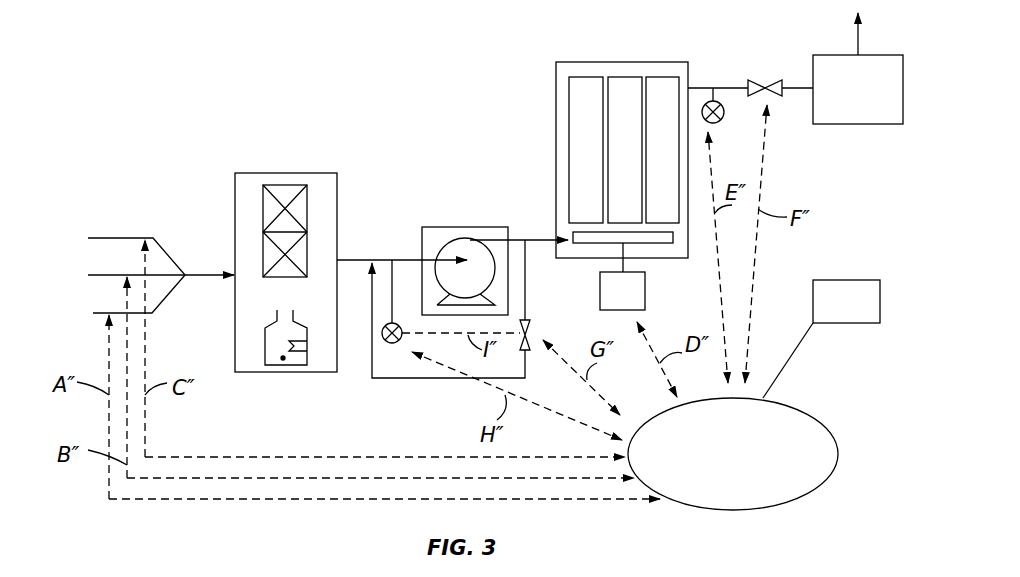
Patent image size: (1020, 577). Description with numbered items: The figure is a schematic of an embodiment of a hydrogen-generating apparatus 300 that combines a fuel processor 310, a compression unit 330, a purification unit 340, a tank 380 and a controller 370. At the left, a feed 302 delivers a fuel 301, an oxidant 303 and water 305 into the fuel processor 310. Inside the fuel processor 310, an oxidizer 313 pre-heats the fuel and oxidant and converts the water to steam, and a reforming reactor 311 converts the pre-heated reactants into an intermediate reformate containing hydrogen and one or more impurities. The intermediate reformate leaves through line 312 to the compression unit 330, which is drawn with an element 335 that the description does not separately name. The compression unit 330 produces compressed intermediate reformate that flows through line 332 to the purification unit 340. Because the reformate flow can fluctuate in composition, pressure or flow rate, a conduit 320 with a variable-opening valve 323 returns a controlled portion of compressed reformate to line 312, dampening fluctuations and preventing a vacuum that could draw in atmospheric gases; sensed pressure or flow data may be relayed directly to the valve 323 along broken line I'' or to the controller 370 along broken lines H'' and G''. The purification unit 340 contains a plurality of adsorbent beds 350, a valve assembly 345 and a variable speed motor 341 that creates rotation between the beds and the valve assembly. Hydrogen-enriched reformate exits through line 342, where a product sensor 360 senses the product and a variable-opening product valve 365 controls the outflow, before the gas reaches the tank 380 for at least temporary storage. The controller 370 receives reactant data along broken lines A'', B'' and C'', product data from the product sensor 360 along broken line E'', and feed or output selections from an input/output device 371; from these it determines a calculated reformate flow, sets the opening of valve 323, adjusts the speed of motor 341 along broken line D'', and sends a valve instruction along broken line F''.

The apparatus 300 is at (401, 88).
The fuel 301 is at (76, 250).
The feed 302 is at (200, 278).
The oxidant 303 is at (76, 287).
The water 305 is at (76, 325).
The fuel processor 310 is at (247, 172).
The reforming reactor 311 is at (288, 192).
The line 312 is at (355, 258).
The oxidizer 313 is at (273, 353).
The conduit 320 is at (395, 380).
The variable-opening valve 323 is at (530, 323).
The compression unit 330 is at (433, 233).
The line 332 is at (532, 237).
The pump 335 is at (465, 247).
The purification unit 340 is at (568, 60).
The variable speed motor 341 is at (641, 302).
The line 342 is at (695, 86).
The valve assembly 345 is at (660, 243).
The adsorbent beds 350 is at (623, 82).
The product sensor 360 is at (724, 116).
The product valve 365 is at (777, 83).
The controller 370 is at (754, 466).
The input/output device 371 is at (858, 323).
The tank 380 is at (878, 101).